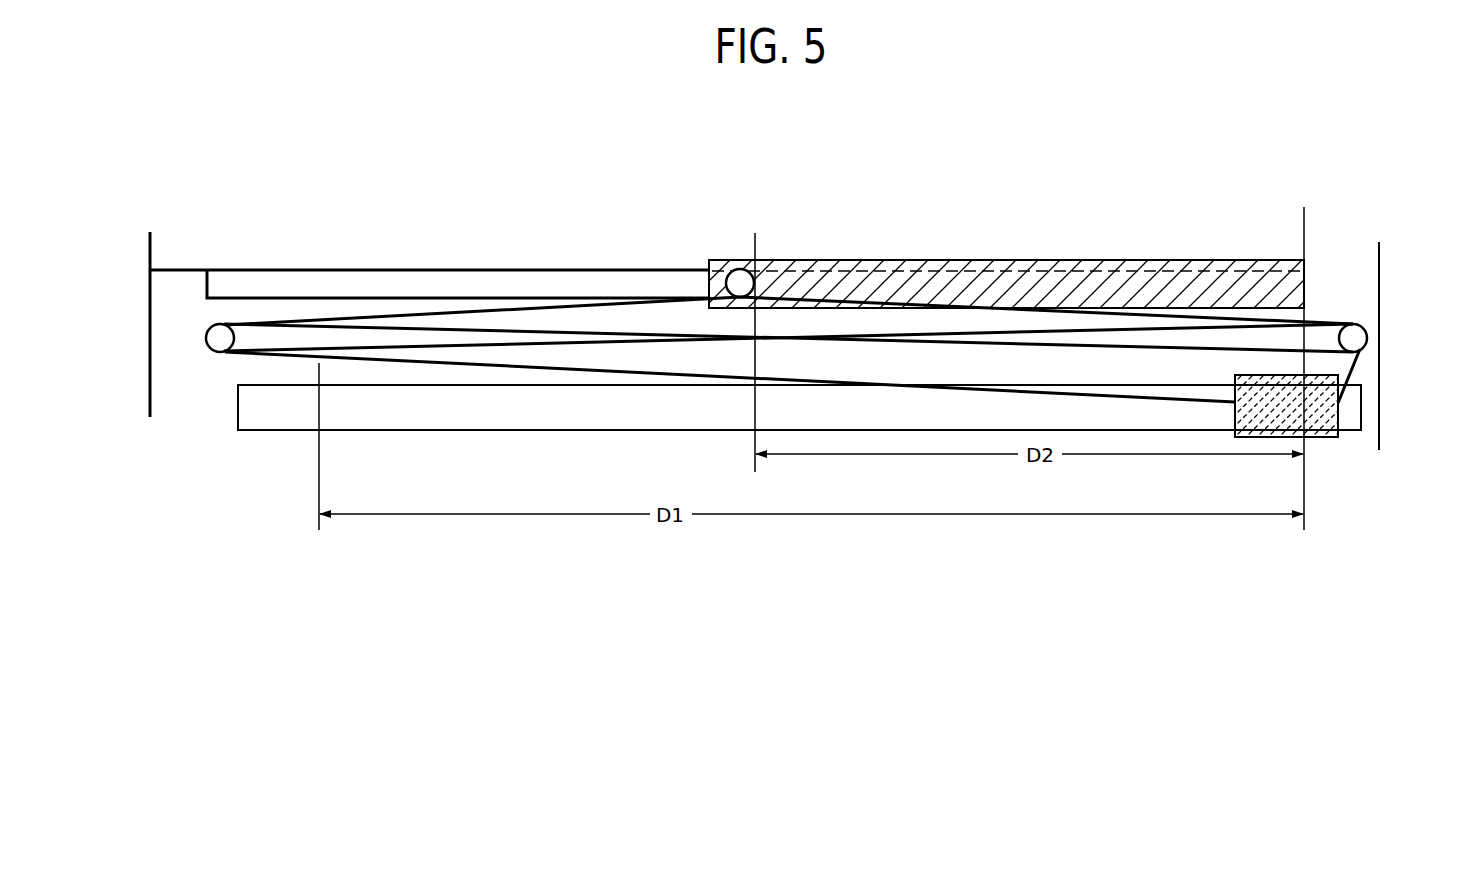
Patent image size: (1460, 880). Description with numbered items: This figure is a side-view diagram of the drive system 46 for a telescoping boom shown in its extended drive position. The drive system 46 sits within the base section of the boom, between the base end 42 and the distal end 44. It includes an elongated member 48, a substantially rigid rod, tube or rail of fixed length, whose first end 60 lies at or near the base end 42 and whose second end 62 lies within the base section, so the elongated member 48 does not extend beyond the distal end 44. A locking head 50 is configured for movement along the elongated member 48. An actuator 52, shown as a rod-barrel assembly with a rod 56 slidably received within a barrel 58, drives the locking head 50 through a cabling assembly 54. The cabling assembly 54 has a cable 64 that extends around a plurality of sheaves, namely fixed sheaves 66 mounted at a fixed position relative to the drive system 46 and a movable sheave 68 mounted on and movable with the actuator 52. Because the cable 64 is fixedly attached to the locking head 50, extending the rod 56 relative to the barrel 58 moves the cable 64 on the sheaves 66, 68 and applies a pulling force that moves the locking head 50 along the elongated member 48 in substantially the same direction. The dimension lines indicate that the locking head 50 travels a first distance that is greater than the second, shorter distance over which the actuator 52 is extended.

The base end 42 is at (167, 306).
The distal end 44 is at (1383, 267).
The drive system 46 is at (914, 192).
The elongated member 48 is at (285, 418).
The locking head 50 is at (1318, 425).
The actuator 52 is at (775, 280).
The cabling assembly 54 is at (272, 352).
The rod 56 is at (348, 277).
The barrel 58 is at (1215, 285).
The first end 60 is at (242, 400).
The second end 62 is at (1362, 400).
The cable 64 is at (495, 310).
The fixed sheaves 66 is at (218, 333).
The movable sheave 68 is at (742, 280).